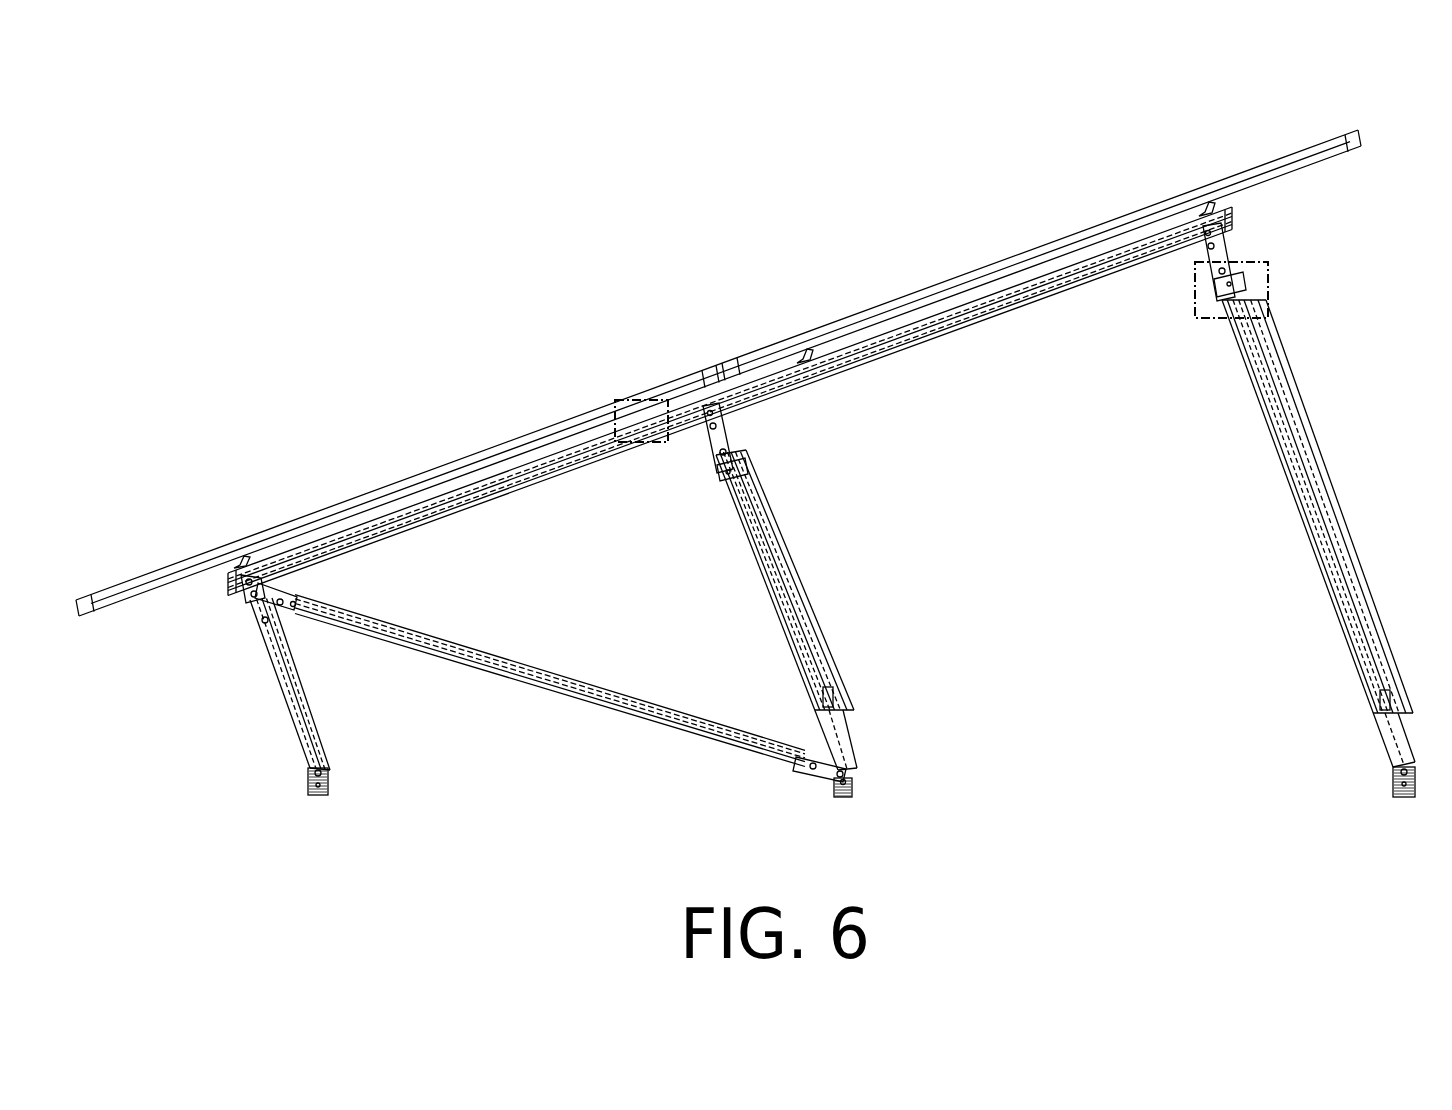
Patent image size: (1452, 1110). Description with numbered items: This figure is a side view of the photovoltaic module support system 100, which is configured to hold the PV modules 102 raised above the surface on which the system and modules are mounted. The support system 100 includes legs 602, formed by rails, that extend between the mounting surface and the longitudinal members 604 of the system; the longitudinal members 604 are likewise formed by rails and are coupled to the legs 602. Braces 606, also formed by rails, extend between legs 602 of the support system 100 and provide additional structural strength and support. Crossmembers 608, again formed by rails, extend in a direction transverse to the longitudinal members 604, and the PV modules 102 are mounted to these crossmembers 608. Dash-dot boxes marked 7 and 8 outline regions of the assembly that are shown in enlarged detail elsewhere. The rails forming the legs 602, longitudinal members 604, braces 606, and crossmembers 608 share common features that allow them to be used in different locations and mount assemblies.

The support system 100 is at (1366, 96).
The PV modules 102 is at (895, 280).
The longitudinal members 604 is at (897, 347).
The braces 606 is at (787, 557).
The legs 602 is at (303, 700).
The crossmembers 608 is at (247, 568).
The detail region shown in FIG. 7 is at (1268, 293).
The detail region shown in FIG. 8 is at (652, 443).